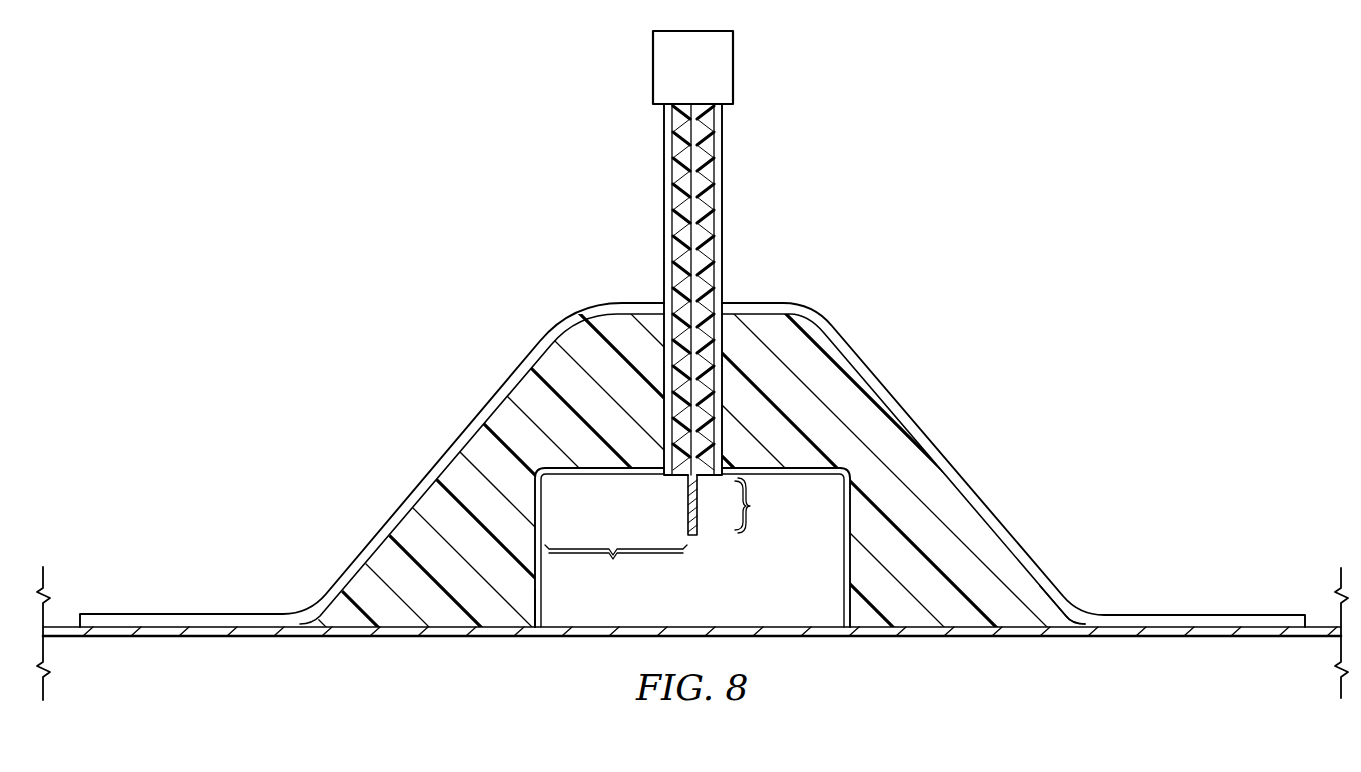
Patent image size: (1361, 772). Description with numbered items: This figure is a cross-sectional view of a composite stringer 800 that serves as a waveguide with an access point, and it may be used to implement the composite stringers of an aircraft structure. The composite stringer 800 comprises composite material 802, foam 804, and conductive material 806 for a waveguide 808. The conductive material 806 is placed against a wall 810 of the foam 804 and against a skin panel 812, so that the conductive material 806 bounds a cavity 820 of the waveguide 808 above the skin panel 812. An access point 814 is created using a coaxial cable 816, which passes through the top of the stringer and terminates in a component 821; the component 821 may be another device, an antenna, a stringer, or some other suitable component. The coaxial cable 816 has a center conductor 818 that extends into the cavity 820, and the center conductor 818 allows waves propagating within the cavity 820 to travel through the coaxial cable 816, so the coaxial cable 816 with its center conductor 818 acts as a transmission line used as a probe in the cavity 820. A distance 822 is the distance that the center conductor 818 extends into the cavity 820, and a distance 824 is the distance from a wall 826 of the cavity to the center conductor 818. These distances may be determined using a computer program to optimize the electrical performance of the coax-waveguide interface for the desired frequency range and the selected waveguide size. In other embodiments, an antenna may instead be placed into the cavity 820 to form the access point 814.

The composite stringer 800 is at (347, 128).
The composite material 802 is at (957, 473).
The foam 804 is at (967, 620).
The conductive material 806 is at (802, 451).
The waveguide 808 is at (588, 453).
The wall 810 is at (541, 493).
The skin panel 812 is at (822, 637).
The access point 814 is at (655, 292).
The coaxial cable 816 is at (730, 198).
The center conductor 818 is at (697, 518).
The cavity 820 is at (713, 607).
The component 821 is at (735, 65).
The distance 822 is at (767, 505).
The distance 824 is at (616, 568).
The wall 826 is at (553, 627).